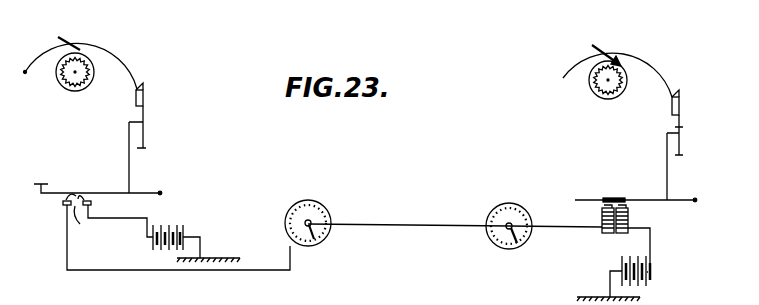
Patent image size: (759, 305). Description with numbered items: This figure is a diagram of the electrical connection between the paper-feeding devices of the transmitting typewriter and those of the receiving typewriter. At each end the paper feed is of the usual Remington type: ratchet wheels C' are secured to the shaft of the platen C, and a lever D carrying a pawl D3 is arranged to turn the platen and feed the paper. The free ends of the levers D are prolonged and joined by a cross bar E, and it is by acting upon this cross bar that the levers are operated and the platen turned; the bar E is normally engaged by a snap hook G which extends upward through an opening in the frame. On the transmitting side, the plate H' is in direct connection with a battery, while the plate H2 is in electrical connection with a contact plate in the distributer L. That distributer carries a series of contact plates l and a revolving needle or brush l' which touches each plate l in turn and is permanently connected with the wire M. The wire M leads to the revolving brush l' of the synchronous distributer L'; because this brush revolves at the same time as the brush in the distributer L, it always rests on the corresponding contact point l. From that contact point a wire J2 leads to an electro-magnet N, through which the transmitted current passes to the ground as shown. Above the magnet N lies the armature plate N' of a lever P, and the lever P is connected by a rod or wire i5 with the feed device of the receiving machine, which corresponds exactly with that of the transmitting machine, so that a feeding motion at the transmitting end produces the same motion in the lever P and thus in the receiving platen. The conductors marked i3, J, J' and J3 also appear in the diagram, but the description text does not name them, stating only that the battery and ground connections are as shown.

The lever D is at (100, 51).
The pawl D3 is at (79, 49).
The platen C is at (364, 77).
The ratchet wheels C' is at (353, 90).
The snap hook G is at (144, 88).
The cross bar E is at (143, 101).
The rods or wires i5 is at (129, 164).
The plates H2 is at (62, 205).
The plate H' is at (97, 206).
The wire i3 is at (86, 226).
The battery J is at (135, 226).
The ground connection J' is at (206, 265).
The distributer L is at (298, 216).
The contact plates l is at (413, 219).
The revolving needle or brush l' is at (412, 252).
The wire M is at (420, 227).
The synchronous distributer L' is at (517, 218).
The wires J2 is at (570, 213).
The armature plate N' is at (636, 191).
The levers P is at (646, 191).
The electro-magnets N is at (629, 219).
The battery J3 is at (650, 245).